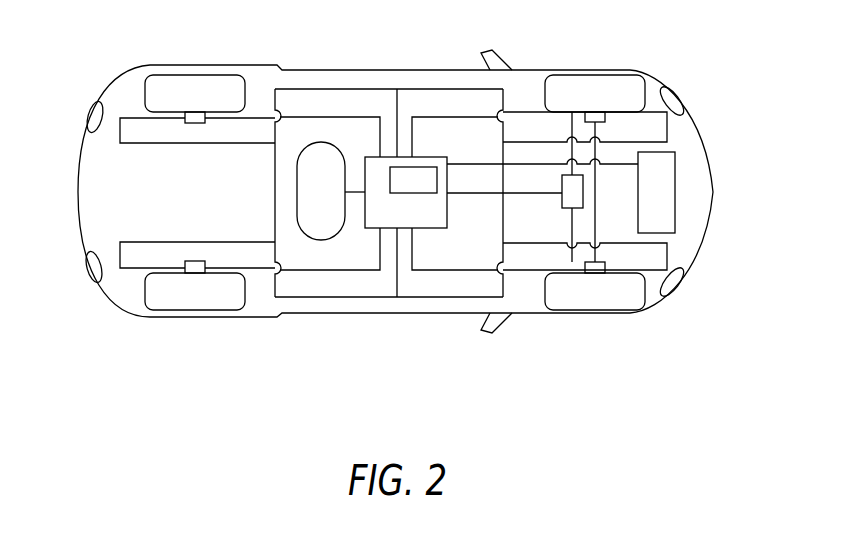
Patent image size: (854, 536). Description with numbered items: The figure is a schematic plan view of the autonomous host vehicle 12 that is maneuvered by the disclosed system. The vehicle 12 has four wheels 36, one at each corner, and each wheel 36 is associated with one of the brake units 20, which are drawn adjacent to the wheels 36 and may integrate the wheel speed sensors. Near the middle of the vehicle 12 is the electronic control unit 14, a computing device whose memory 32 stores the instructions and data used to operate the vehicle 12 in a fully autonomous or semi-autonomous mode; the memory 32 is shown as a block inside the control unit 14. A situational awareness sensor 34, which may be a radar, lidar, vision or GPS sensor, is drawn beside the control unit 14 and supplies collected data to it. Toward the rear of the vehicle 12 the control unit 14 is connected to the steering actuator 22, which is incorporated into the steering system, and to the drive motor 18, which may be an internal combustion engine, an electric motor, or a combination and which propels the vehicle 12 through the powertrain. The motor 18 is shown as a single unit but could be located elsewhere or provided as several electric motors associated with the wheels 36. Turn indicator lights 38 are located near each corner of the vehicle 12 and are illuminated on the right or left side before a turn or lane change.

The autonomous host vehicle 12 is at (684, 76).
The electronic control unit 14 is at (434, 156).
The drive motor 18 is at (677, 172).
The brake units 20 is at (196, 113).
The steering actuator 22 is at (569, 210).
The memory 32 is at (423, 194).
The situational awareness sensors 34 is at (297, 197).
The wheels 36 is at (175, 75).
The turn indicator lights 38 is at (87, 119).